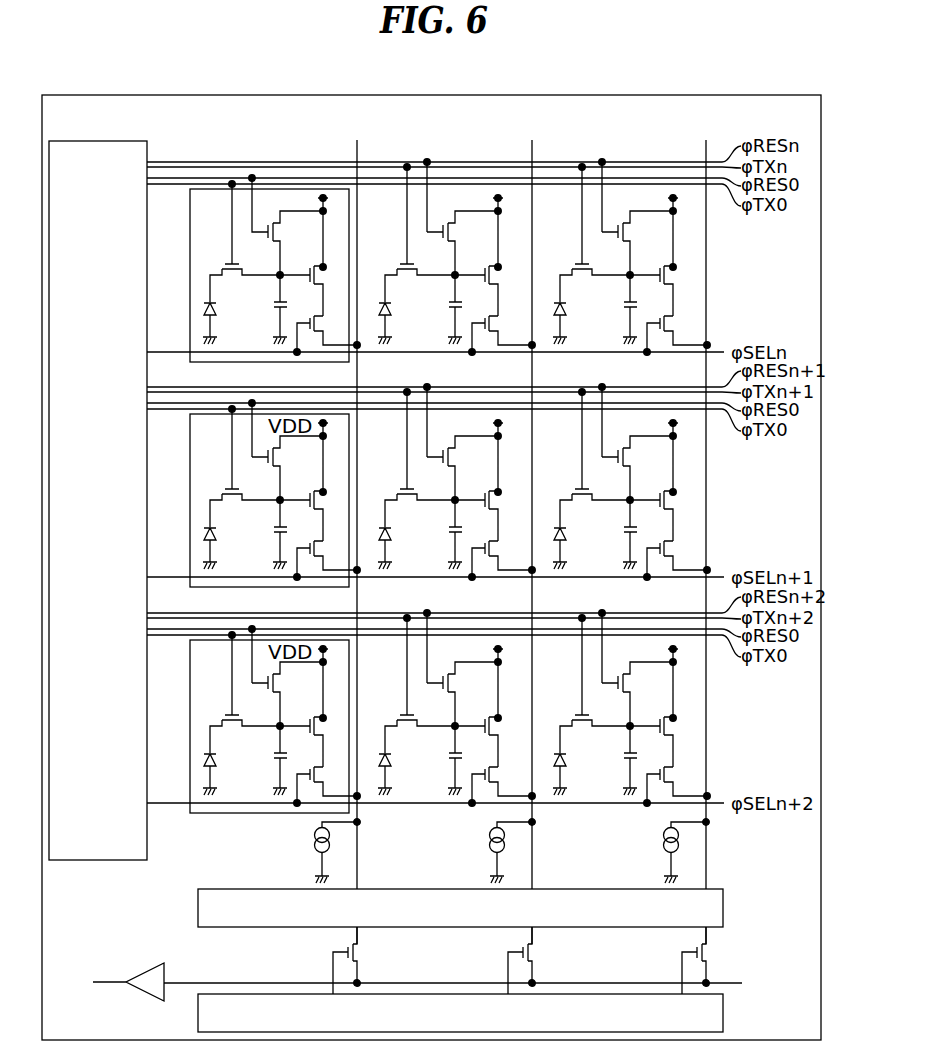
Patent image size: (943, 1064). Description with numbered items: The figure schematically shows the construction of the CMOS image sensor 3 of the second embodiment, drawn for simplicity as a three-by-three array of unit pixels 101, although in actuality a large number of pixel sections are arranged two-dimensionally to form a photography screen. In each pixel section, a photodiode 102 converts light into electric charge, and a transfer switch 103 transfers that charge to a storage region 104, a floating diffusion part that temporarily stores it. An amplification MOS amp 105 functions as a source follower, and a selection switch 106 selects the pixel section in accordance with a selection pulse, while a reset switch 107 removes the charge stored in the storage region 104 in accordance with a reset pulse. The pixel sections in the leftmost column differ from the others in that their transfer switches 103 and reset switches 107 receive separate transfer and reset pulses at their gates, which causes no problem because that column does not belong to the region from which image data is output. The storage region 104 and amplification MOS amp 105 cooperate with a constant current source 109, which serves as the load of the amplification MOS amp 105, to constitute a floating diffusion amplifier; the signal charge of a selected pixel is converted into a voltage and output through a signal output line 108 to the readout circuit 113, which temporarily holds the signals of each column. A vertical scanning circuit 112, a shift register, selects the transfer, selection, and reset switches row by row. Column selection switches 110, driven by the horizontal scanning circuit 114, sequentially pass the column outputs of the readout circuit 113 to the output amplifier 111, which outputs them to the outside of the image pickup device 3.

The CMOS image sensor 3 is at (788, 95).
The unit pixel 101 is at (190, 230).
The photodiode 102 is at (203, 307).
The transfer switch 103 is at (224, 265).
The storage region 104 is at (277, 312).
The amplification MOS amp 105 is at (320, 262).
The selection switch 106 is at (313, 327).
The reset switch 107 is at (270, 228).
The signal output line 108 is at (358, 840).
The constant current source 109 is at (313, 836).
The column selection switch 110 is at (355, 948).
The output amplifier 111 is at (143, 972).
The vertical scanning circuit 112 is at (127, 140).
The readout circuit 113 is at (197, 893).
The horizontal scanning circuit 114 is at (197, 1028).